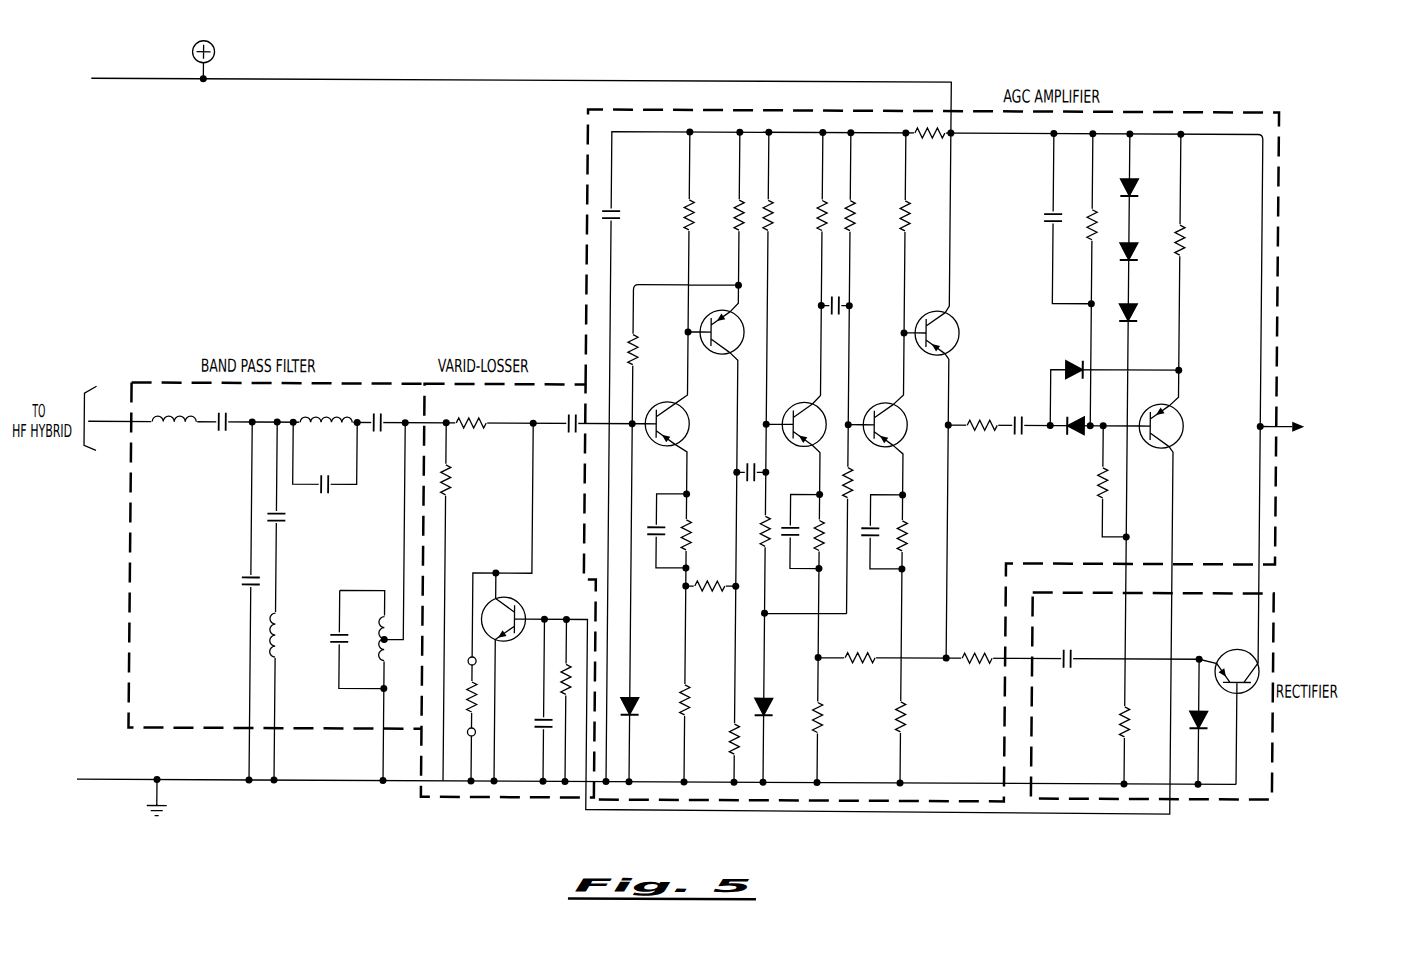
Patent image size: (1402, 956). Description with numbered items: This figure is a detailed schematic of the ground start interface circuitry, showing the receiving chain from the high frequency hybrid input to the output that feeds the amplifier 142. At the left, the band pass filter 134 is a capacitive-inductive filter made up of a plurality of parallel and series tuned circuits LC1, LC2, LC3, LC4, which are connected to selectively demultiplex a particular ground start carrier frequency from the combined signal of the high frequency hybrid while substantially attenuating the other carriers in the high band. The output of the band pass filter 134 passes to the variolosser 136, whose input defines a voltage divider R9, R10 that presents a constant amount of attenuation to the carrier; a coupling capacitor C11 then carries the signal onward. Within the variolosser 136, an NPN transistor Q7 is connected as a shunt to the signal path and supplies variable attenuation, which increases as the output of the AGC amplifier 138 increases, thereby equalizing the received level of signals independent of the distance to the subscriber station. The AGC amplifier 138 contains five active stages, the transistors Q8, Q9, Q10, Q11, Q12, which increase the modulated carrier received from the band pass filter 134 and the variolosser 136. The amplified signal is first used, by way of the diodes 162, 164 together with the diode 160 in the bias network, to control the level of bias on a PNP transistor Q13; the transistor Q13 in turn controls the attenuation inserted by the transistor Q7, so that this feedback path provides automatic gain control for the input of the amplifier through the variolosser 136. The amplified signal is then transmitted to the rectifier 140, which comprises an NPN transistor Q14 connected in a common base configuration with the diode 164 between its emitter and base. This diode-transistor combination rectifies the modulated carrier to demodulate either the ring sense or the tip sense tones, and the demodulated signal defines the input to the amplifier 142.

The band pass filter 134 is at (129, 601).
The variolosser 136 is at (476, 799).
The AGC amplifier 138 is at (1159, 112).
The rectifier 140 is at (1280, 790).
The amplifier 142 is at (1341, 426).
The diode 160 is at (1072, 434).
The diode 162 is at (1063, 362).
The diode 164 is at (1190, 708).
The tuned circuit LC1 is at (208, 434).
The tuned circuit LC2 is at (284, 524).
The tuned circuit LC3 is at (337, 430).
The tuned circuit LC4 is at (376, 618).
The voltage divider resistor R9 is at (450, 500).
The voltage divider resistor R10 is at (470, 417).
The capacitor C11 is at (573, 433).
The NPN transistor Q7 is at (520, 602).
The transistor Q8 is at (689, 414).
The transistor Q9 is at (722, 358).
The transistor Q10 is at (805, 400).
The transistor Q11 is at (886, 400).
The transistor Q12 is at (961, 320).
The PNP transistor Q13 is at (1183, 449).
The NPN transistor Q14 is at (1230, 650).